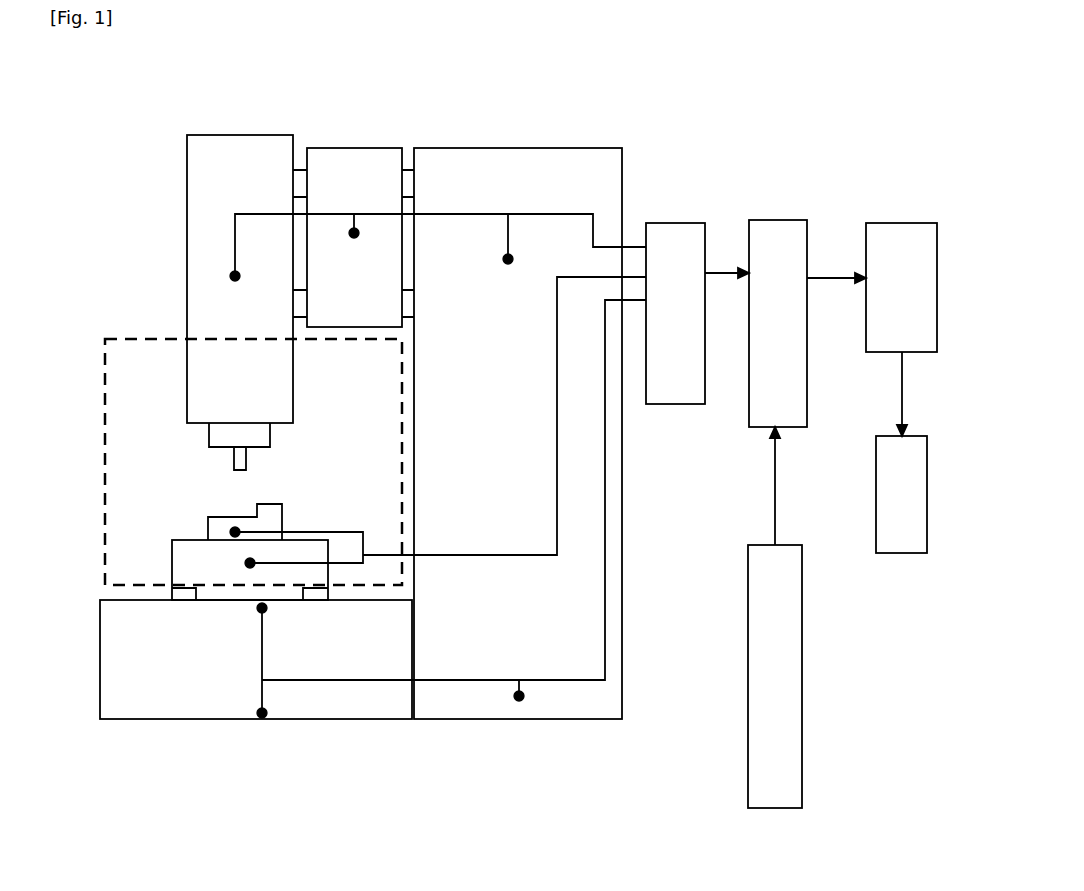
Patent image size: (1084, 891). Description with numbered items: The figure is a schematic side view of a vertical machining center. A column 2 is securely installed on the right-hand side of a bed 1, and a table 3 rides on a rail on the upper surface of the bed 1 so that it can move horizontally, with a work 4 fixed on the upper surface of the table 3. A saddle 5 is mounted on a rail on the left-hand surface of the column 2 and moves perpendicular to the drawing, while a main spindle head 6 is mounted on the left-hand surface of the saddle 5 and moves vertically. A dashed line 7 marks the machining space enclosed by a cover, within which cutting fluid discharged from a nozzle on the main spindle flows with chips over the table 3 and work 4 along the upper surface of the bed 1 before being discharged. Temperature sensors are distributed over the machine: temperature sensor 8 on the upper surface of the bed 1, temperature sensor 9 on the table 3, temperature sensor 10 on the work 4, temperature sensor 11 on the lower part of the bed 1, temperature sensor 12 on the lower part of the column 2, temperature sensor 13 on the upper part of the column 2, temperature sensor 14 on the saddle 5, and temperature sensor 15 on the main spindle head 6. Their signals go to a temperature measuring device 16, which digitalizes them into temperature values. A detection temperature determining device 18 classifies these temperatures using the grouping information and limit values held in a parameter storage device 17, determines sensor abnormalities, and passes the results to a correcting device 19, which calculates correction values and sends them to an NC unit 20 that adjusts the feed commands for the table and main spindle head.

The bed 1 is at (168, 692).
The column 2 is at (571, 178).
The table 3 is at (178, 543).
The work 4 is at (270, 523).
The saddle 5 is at (367, 173).
The main spindle head 6 is at (203, 203).
The machining space 7 is at (158, 338).
The temperature sensor 8 is at (258, 610).
The temperature sensor 9 is at (248, 563).
The temperature sensor 10 is at (232, 530).
The temperature sensor 11 is at (263, 718).
The temperature sensor 12 is at (518, 702).
The temperature sensor 13 is at (507, 265).
The temperature sensor 14 is at (353, 239).
The temperature sensor 15 is at (234, 282).
The temperature measuring device 16 is at (670, 225).
The parameter storage device 17 is at (757, 583).
The detection temperature determining device 18 is at (775, 235).
The correcting device 19 is at (895, 233).
The NC unit 20 is at (880, 435).